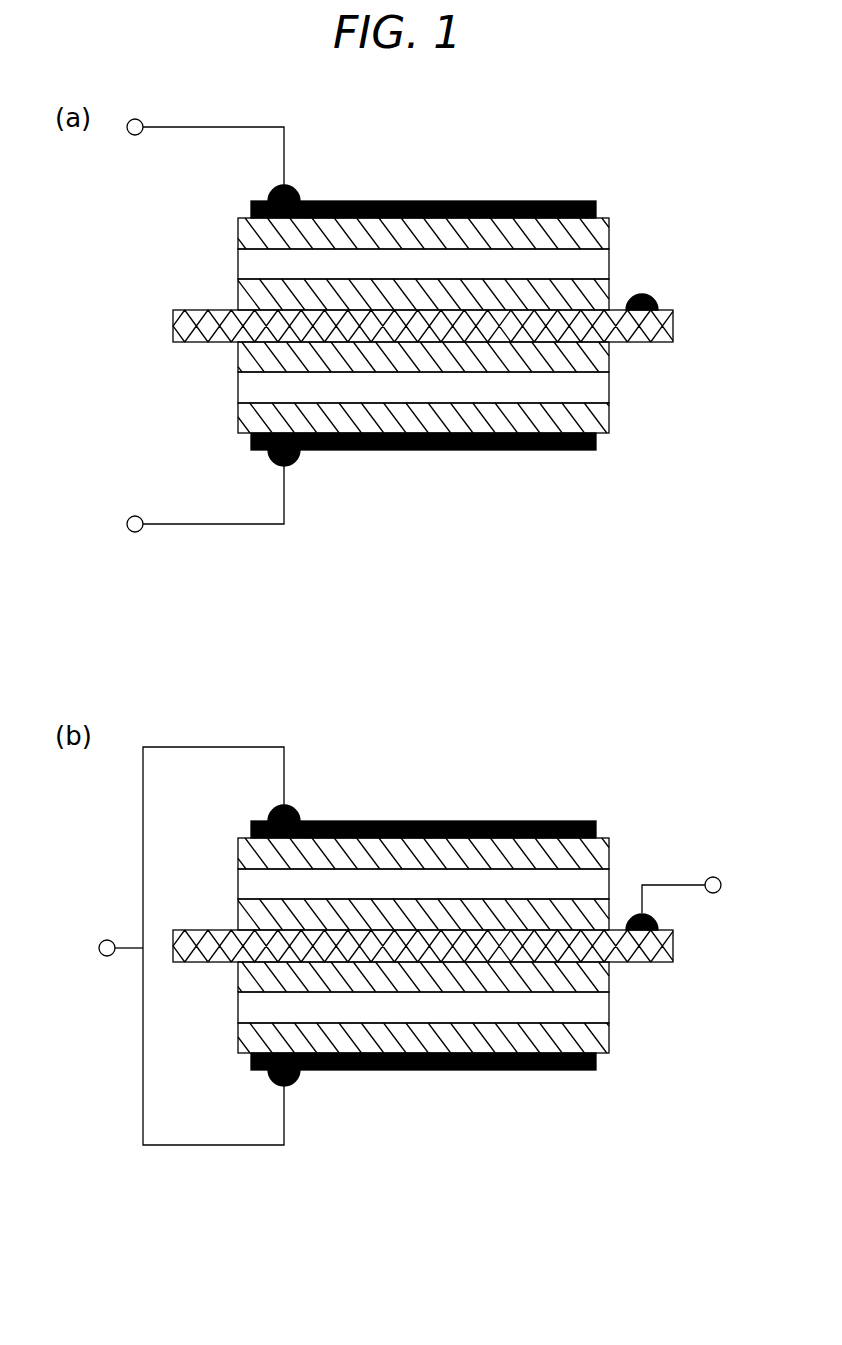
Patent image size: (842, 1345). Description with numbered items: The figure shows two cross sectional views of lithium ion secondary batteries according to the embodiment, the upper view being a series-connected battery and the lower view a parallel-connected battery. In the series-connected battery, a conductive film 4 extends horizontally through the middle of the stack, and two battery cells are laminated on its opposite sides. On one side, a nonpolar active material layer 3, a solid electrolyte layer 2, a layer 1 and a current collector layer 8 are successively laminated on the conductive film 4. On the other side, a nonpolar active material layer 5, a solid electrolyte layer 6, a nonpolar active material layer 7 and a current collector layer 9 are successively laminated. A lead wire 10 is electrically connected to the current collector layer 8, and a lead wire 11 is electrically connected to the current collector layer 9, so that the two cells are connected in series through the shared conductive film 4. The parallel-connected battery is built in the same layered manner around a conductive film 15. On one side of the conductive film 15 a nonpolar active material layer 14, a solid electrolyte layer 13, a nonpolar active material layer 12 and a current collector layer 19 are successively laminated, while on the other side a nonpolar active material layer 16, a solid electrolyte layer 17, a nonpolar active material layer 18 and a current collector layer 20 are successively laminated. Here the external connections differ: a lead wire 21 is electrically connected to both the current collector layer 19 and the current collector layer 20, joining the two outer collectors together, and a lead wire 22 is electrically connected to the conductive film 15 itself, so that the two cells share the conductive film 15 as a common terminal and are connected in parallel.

The layer 1 is at (238, 233).
The solid electrolyte layer 2 is at (600, 265).
The nonpolar active material layer 3 is at (238, 285).
The conductive film 4 is at (658, 330).
The nonpolar active material layer 5 is at (238, 354).
The solid electrolyte layer 6 is at (598, 387).
The nonpolar active material layer 7 is at (238, 418).
The current collector layer 8 is at (568, 200).
The current collector layer 9 is at (560, 451).
The lead wire 10 is at (141, 121).
The lead wire 11 is at (142, 531).
The nonpolar active material layer 12 is at (245, 854).
The solid electrolyte layer 13 is at (600, 885).
The nonpolar active material layer 14 is at (245, 910).
The conductive film 15 is at (660, 950).
The nonpolar active material layer 16 is at (245, 973).
The solid electrolyte layer 17 is at (598, 1007).
The nonpolar active material layer 18 is at (245, 1040).
The current collector layer 19 is at (568, 820).
The current collector layer 20 is at (560, 1071).
The lead wire 21 is at (98, 950).
The lead wire 22 is at (721, 885).